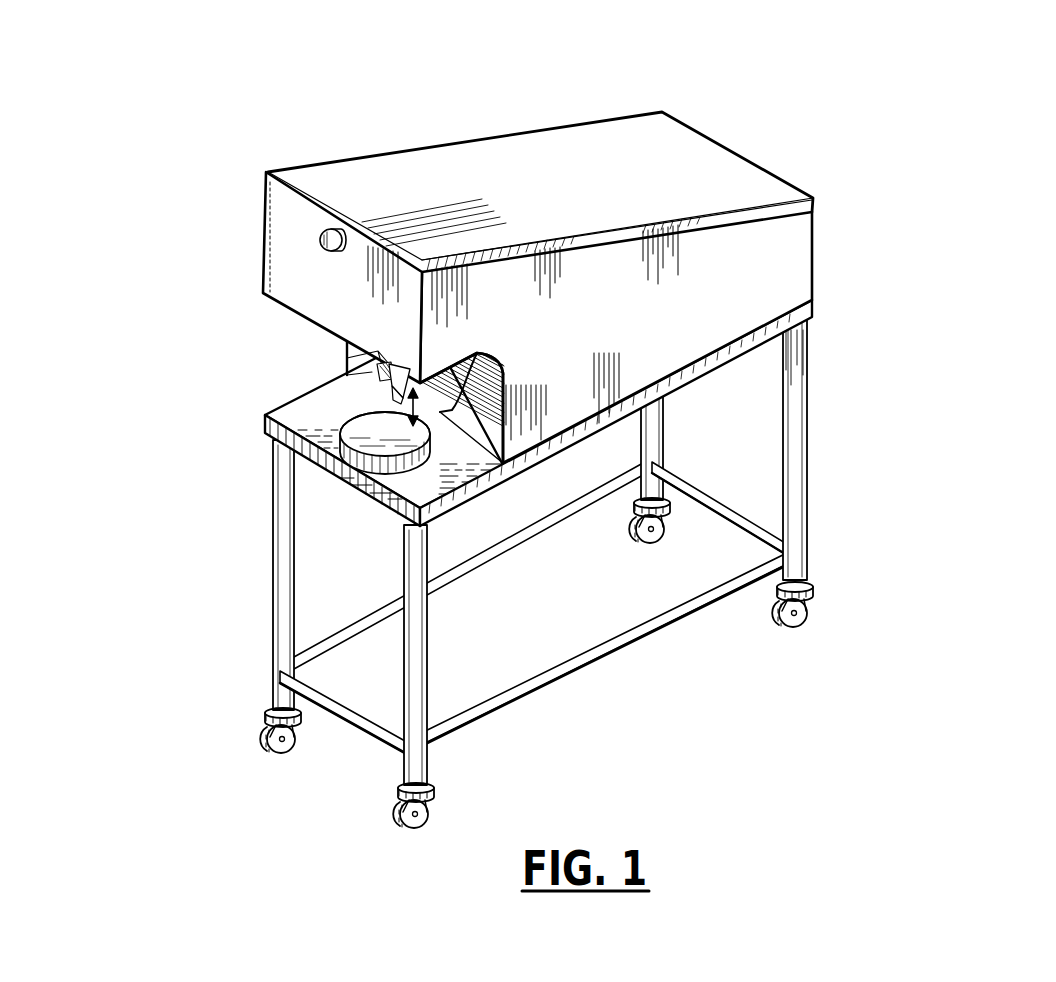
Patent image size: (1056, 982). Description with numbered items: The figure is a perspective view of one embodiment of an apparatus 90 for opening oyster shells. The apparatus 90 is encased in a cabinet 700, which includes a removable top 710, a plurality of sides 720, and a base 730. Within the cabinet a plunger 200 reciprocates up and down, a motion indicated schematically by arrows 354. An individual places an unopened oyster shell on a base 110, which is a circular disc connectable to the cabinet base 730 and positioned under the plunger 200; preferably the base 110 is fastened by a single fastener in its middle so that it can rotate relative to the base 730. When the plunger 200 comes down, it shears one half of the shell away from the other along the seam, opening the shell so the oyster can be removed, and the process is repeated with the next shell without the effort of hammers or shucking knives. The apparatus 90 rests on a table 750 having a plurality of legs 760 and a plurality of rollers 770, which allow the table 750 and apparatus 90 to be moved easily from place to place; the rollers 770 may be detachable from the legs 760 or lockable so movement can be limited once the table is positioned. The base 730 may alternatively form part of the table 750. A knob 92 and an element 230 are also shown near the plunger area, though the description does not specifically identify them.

The apparatus 90 is at (920, 95).
The knob 92 is at (343, 237).
The base 110 is at (365, 452).
The plunger 200 is at (377, 365).
The nozzle tip 230 is at (440, 410).
The arrows 354 is at (503, 363).
The cabinet 700 is at (545, 158).
The removable top 710 is at (683, 157).
The sides 720 is at (772, 280).
The base 730 is at (313, 440).
The table 750 is at (720, 357).
The legs 760 is at (797, 520).
The rollers 770 is at (808, 605).